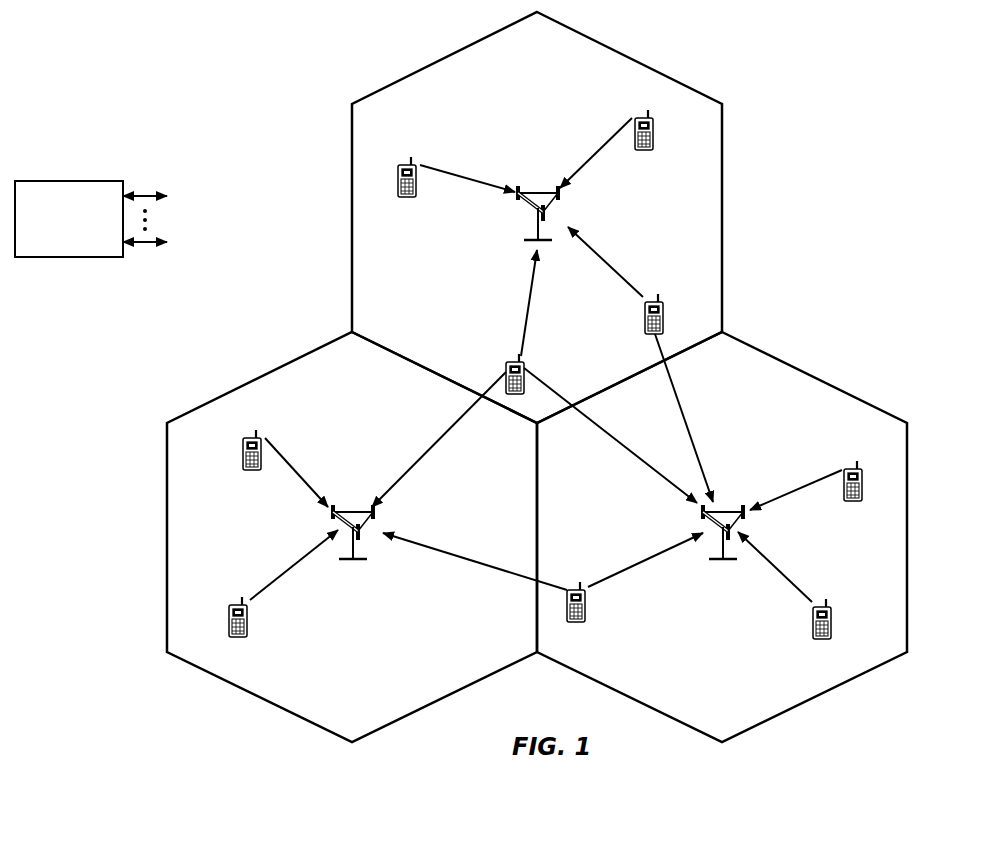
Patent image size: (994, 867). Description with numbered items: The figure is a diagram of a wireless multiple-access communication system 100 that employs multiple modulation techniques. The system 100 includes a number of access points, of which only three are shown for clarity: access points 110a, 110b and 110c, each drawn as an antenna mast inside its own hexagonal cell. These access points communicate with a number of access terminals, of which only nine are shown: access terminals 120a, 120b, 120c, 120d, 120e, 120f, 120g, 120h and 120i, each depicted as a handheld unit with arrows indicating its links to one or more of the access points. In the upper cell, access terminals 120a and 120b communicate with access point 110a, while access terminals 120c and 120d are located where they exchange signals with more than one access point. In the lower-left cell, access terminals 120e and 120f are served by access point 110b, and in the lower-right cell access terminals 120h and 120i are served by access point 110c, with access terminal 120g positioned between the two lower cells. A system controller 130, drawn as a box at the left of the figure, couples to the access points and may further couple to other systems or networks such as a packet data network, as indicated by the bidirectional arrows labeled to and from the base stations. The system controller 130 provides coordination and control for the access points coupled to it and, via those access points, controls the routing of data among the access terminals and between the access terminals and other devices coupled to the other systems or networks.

The wireless multiple-access communication system 100 is at (871, 36).
The system controller 130 is at (68, 181).
The access point 110a is at (542, 192).
The access point 110b is at (357, 511).
The access point 110c is at (727, 511).
The access terminal 120a is at (654, 104).
The access terminal 120b is at (411, 158).
The access terminal 120c is at (519, 355).
The access terminal 120d is at (664, 288).
The access terminal 120e is at (256, 431).
The access terminal 120f is at (242, 597).
The access terminal 120g is at (585, 577).
The access terminal 120h is at (832, 593).
The access terminal 120i is at (863, 456).